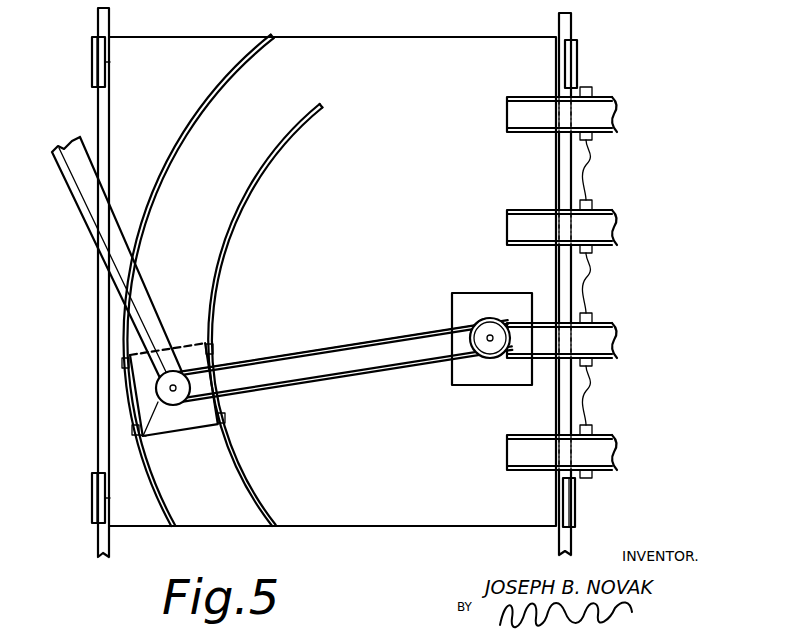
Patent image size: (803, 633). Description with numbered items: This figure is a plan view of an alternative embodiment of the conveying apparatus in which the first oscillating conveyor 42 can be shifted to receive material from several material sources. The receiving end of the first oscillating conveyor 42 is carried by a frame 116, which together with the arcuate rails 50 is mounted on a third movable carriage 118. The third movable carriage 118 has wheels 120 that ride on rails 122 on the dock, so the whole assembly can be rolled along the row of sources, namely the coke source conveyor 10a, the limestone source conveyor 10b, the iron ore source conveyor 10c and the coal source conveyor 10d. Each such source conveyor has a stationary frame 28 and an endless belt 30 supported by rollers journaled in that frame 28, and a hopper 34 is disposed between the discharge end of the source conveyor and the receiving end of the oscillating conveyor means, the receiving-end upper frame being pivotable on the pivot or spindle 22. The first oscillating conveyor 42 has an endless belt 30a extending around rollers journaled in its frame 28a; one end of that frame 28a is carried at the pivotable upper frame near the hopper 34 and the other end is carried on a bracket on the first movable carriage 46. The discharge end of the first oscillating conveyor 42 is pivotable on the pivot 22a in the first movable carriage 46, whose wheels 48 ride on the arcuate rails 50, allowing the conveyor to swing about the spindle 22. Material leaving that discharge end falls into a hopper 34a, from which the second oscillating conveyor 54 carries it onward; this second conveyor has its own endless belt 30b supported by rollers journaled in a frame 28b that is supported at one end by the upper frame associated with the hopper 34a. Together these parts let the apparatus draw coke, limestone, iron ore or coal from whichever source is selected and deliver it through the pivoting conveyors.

The third movable carriage 118 is at (379, 30).
The wheels 120 is at (90, 64).
The rails 122 is at (575, 26).
The coke source conveyor 10a is at (618, 97).
The limestone source conveyor 10b is at (618, 210).
The iron ore source conveyor 10c is at (618, 323).
The coal source conveyor 10d is at (618, 435).
The endless belt 30 is at (562, 282).
The stationary frame 28 is at (602, 282).
The arcuate rails 50 is at (258, 172).
The frame 116 is at (472, 386).
The pivot or spindle 22 is at (492, 334).
The hopper 34 is at (477, 322).
The endless belt 30a is at (326, 379).
The frame 28a is at (347, 345).
The first oscillating conveyor 42 is at (383, 339).
The endless belt 30b is at (140, 316).
The second oscillating conveyor 54 is at (80, 229).
The frame 28b is at (139, 276).
The first movable carriage 46 is at (204, 428).
The hopper 34a is at (144, 437).
The pivot 22a is at (175, 383).
The wheels 48 is at (124, 364).